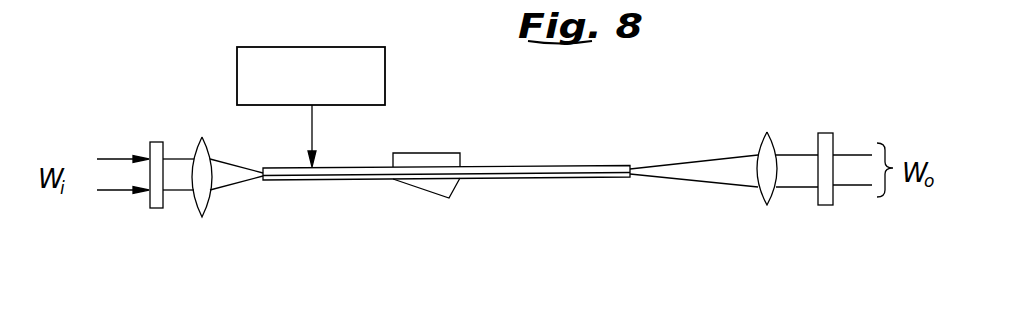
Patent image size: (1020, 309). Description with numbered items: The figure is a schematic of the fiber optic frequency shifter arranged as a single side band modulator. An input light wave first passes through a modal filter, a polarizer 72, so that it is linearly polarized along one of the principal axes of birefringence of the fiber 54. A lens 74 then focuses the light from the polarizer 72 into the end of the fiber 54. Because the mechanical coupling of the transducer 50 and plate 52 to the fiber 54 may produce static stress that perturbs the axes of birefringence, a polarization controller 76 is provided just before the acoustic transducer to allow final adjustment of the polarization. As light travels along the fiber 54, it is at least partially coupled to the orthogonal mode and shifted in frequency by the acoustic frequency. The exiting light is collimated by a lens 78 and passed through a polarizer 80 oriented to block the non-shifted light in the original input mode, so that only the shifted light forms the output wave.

The transducer 50 is at (458, 197).
The plate 52 is at (452, 153).
The fiber 54 is at (340, 180).
The polarizer 72 is at (147, 145).
The lens 74 is at (203, 203).
The polarization controller 76 is at (386, 52).
The lens 78 is at (762, 143).
The polarizer 80 is at (828, 143).